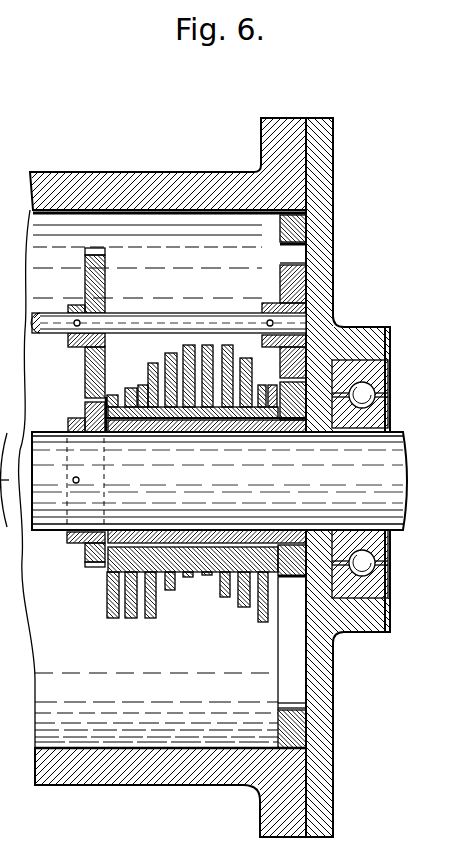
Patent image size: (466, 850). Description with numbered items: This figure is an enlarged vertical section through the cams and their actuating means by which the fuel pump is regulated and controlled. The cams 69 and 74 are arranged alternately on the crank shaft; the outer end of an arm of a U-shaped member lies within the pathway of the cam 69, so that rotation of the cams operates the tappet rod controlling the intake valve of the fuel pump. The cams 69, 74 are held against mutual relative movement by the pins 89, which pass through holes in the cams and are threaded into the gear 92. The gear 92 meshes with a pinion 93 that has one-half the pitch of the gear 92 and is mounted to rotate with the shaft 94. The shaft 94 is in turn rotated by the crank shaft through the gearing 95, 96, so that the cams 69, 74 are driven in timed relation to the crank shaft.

The cam 69 is at (122, 576).
The cam 74 is at (107, 598).
The pin 89 is at (209, 572).
The gear 92 is at (287, 578).
The pinion 93 is at (280, 287).
The shaft 94 is at (178, 322).
The gearing 95 is at (106, 284).
The gearing 96 is at (67, 418).